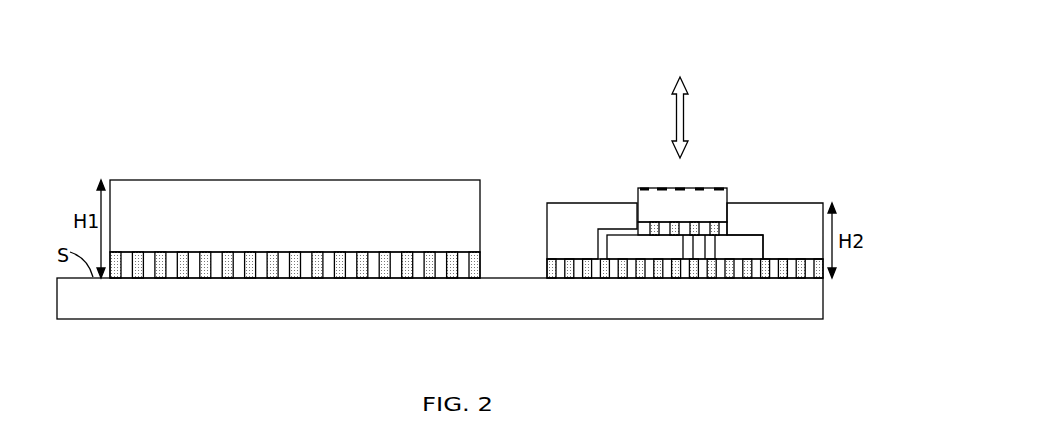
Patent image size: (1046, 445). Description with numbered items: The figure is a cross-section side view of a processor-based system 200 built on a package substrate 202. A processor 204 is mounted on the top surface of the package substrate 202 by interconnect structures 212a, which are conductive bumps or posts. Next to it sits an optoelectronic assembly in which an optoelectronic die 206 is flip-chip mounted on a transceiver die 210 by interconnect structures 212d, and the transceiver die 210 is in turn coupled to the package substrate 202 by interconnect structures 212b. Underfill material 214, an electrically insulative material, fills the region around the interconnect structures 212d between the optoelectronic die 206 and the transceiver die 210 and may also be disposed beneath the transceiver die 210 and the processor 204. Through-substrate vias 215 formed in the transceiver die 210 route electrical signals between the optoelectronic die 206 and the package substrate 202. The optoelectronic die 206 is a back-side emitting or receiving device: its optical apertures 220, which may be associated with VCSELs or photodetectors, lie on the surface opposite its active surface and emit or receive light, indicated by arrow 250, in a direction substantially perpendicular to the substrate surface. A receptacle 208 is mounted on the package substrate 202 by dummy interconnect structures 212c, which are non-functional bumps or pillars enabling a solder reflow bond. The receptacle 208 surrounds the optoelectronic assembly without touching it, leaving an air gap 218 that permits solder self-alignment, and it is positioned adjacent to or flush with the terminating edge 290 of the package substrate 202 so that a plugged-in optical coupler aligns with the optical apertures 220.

The processor-based system 200 is at (403, 96).
The package substrate 202 is at (530, 310).
The processor 204 is at (314, 228).
The optoelectronic die 206 is at (689, 216).
The receptacle 208 is at (593, 229).
The transceiver die 210 is at (670, 257).
The interconnect structures 212a is at (467, 279).
The interconnect structures 212b is at (758, 279).
The dummy interconnect structures 212c is at (603, 279).
The interconnect structures 212d is at (713, 232).
The underfill material 214 is at (545, 268).
The through-substrate vias 215 is at (710, 248).
The air gap 218 is at (637, 203).
The optical apertures 220 is at (666, 188).
The arrow 250 is at (684, 118).
The terminating edge 290 is at (826, 298).